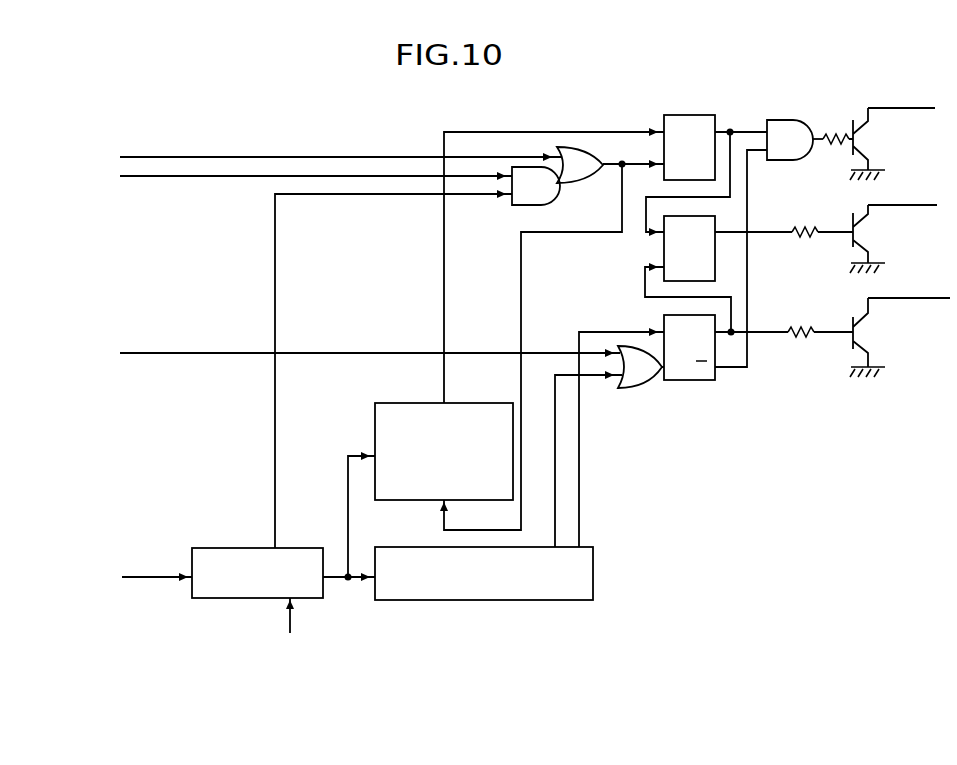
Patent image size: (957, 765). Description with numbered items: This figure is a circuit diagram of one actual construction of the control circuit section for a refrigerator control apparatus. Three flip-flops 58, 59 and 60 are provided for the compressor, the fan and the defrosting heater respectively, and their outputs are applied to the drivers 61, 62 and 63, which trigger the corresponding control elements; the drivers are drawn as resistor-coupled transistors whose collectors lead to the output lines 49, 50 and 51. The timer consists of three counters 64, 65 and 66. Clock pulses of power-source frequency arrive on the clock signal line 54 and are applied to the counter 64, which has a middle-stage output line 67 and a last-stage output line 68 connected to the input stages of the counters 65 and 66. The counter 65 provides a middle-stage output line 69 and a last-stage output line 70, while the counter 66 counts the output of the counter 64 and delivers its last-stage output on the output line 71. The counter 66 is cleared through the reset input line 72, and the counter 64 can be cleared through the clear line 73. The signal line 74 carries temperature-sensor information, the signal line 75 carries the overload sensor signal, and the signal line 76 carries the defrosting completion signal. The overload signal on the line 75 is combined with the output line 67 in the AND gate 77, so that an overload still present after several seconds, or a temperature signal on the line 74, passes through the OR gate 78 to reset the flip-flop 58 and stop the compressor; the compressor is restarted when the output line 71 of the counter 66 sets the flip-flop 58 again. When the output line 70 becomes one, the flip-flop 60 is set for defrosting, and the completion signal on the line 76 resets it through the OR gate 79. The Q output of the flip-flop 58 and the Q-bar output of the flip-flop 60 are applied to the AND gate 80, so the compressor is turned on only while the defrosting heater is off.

The output line to first load 49 is at (891, 108).
The output line to second load 50 is at (896, 205).
The output line to third load 51 is at (903, 298).
The clock signal line 54 is at (160, 575).
The flip-flop 58 is at (690, 115).
The flip-flop 59 is at (664, 257).
The flip-flop 60 is at (710, 380).
The driver 61 is at (868, 139).
The driver 62 is at (870, 233).
The driver 63 is at (870, 331).
The counter 64 is at (246, 599).
The counter 65 is at (500, 600).
The counter 66 is at (418, 403).
The output line 67 is at (275, 468).
The output line 68 is at (335, 580).
The output line 69 is at (555, 457).
The output line 70 is at (579, 470).
The output line 71 is at (444, 356).
The reset input line 72 is at (499, 528).
The clear line 73 is at (290, 626).
The signal line 74 is at (196, 157).
The signal line 75 is at (190, 177).
The signal line 76 is at (192, 354).
The AND gate 77 is at (548, 205).
The OR gate 78 is at (590, 176).
The OR gate 79 is at (648, 388).
The AND gate 80 is at (808, 120).